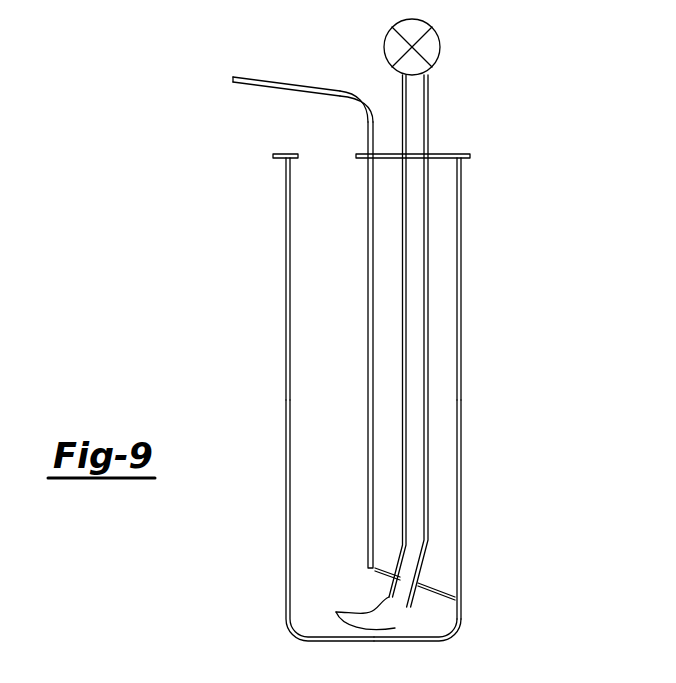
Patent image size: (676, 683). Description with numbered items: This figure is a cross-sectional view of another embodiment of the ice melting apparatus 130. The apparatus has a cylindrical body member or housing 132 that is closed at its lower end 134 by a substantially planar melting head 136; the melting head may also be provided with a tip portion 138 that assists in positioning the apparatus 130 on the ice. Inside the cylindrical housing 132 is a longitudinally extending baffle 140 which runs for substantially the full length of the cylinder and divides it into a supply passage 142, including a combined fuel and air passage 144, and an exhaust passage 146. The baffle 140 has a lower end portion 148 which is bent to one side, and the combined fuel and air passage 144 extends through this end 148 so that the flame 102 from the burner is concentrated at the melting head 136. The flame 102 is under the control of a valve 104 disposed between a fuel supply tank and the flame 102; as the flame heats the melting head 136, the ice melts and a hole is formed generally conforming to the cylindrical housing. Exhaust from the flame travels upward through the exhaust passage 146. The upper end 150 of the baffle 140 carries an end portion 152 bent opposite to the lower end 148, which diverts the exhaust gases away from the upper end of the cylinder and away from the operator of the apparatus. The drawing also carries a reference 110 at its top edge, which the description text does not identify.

The flame 102 is at (404, 626).
The valve 104 is at (451, 35).
The housing 110 is at (130, 4).
The ice melting apparatus 130 is at (416, 418).
The cylindrical body member or housing 132 is at (460, 238).
The lower end 134 is at (461, 558).
The melting head 136 is at (419, 642).
The tip portion 138 is at (378, 642).
The baffle 140 is at (368, 472).
The supply passage 142 is at (447, 407).
The combined fuel and air passage 144 is at (417, 340).
The exhaust passage 146 is at (334, 347).
The lower end portion 148 is at (366, 572).
The upper end 150 is at (366, 133).
The end portion 152 is at (283, 81).